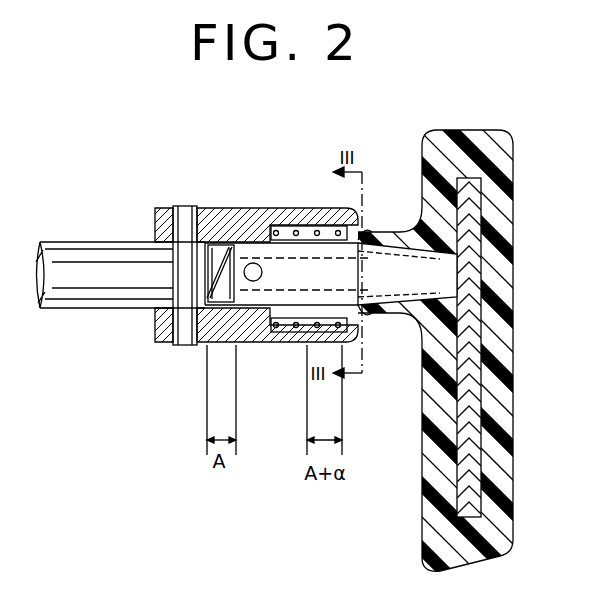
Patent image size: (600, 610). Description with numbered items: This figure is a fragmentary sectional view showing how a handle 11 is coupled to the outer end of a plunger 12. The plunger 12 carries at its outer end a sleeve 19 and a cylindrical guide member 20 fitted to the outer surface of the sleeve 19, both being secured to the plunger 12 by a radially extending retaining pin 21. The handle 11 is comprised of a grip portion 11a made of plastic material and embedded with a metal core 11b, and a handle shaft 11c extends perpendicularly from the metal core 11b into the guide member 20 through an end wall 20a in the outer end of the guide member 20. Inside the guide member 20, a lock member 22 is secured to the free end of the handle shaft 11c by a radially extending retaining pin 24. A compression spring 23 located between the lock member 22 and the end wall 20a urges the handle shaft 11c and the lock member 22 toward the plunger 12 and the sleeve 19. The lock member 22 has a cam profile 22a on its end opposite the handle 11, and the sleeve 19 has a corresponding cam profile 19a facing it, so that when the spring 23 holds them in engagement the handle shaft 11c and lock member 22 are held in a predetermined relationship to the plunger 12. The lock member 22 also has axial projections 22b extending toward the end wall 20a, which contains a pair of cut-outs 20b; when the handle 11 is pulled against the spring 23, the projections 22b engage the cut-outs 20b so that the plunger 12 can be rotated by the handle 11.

The handle 11 is at (514, 236).
The grip portion 11a is at (505, 358).
The metal core 11b is at (481, 438).
The handle shaft 11c is at (325, 212).
The plunger 12 is at (64, 241).
The sleeve 19 is at (213, 210).
The cam profile 19a is at (234, 247).
The cylindrical guide member 20 is at (230, 210).
The end wall 20a is at (368, 230).
The cut-outs 20b is at (364, 318).
The retaining pin 21 is at (182, 208).
The lock member 22 is at (257, 343).
The cam profile 22a is at (212, 303).
The axial projections 22b is at (297, 343).
The compression spring 23 is at (328, 252).
The retaining pin 24 is at (262, 271).